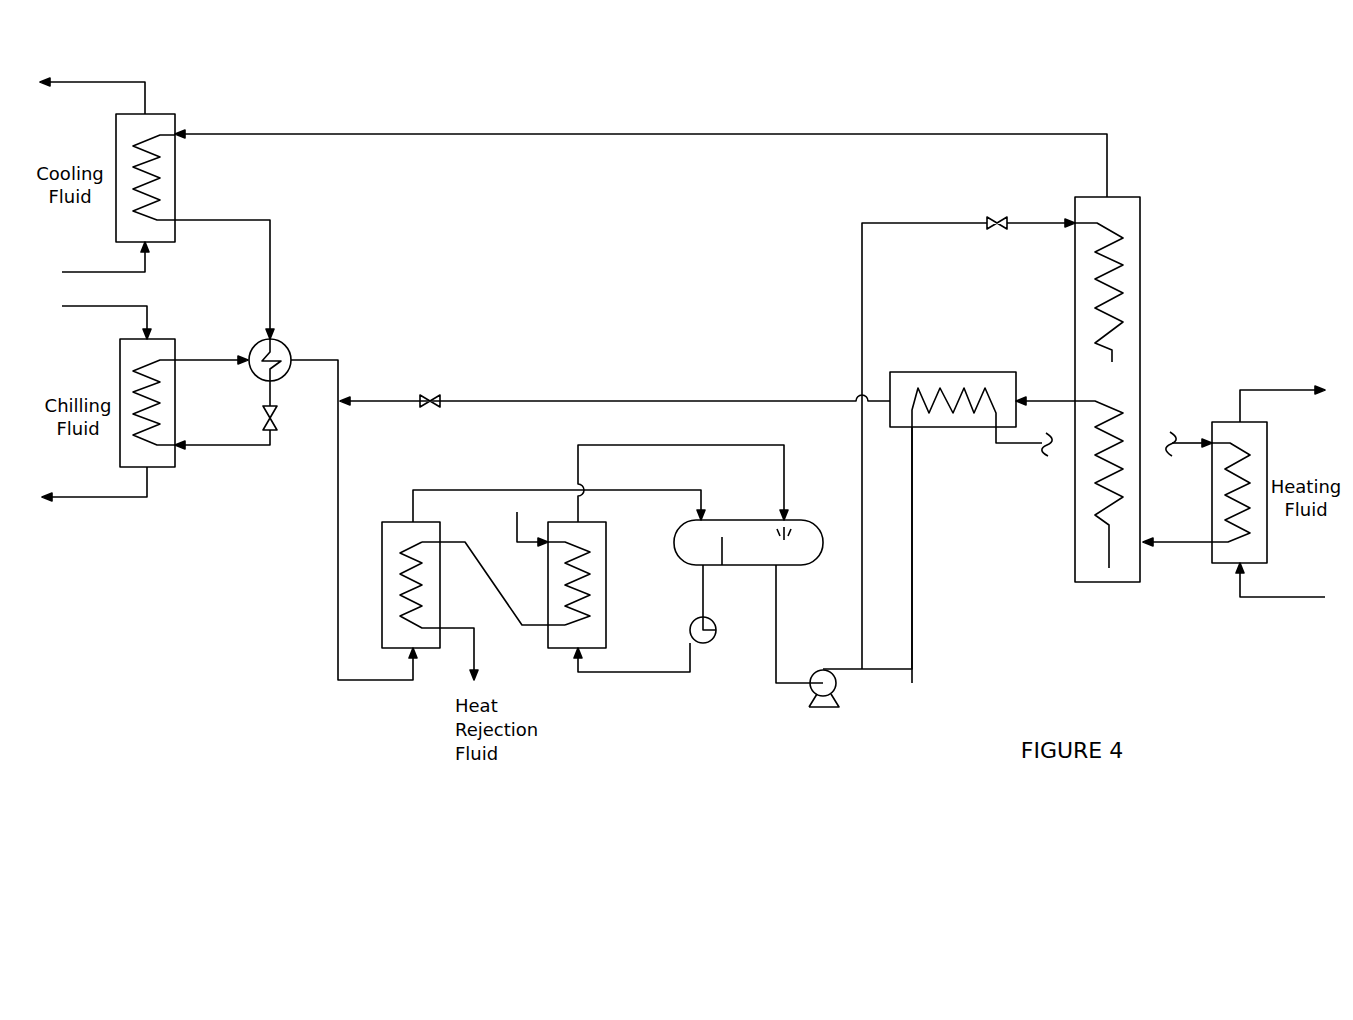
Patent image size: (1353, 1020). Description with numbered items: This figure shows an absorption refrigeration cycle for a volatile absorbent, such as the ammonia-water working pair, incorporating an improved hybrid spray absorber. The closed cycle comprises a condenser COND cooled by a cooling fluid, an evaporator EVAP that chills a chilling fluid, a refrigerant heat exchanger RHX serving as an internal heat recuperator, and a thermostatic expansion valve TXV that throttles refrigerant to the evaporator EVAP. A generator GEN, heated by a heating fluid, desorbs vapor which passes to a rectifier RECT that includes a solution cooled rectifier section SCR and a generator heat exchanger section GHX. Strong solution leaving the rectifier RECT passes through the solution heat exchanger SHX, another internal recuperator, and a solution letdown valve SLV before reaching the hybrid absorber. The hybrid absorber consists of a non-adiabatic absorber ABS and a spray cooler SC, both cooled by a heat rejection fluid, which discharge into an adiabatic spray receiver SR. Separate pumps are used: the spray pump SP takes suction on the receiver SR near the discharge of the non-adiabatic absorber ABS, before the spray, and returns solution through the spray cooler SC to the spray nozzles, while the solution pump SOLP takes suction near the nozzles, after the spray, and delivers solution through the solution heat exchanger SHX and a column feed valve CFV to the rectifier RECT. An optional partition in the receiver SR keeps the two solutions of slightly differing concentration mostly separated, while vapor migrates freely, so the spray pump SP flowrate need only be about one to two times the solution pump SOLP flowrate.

The condenser COND is at (195, 226).
The evaporator EVAP is at (184, 403).
The refrigerant heat exchanger RHX is at (289, 354).
The thermostatic expansion valve TXV is at (250, 413).
The solution letdown valve SLV is at (615, 426).
The non-adiabatic absorber ABS is at (440, 621).
The spray cooler SC is at (594, 580).
The spray receiver SR is at (748, 519).
The spray pump SP is at (723, 629).
The solution pump SOLP is at (818, 662).
The column feed valve CFV is at (1005, 199).
The solution heat exchanger SHX is at (971, 515).
The rectifier RECT is at (1105, 406).
The solution cooled rectifier section SCR is at (1128, 292).
The generator heat exchanger section GHX is at (1075, 484).
The generator GEN is at (1205, 508).